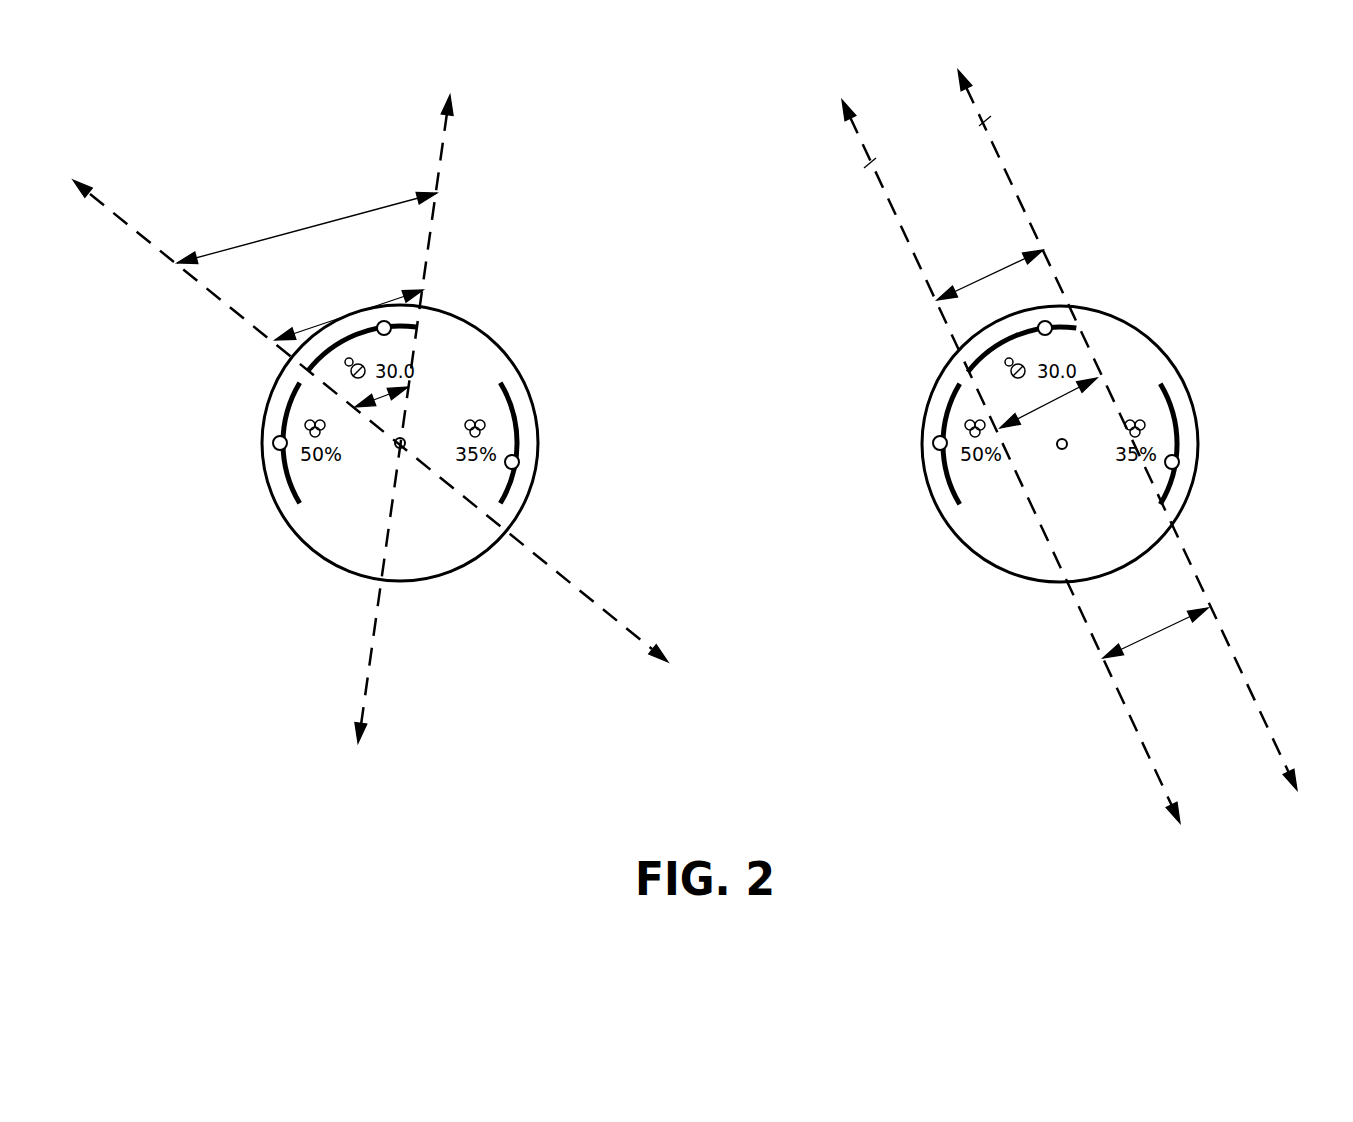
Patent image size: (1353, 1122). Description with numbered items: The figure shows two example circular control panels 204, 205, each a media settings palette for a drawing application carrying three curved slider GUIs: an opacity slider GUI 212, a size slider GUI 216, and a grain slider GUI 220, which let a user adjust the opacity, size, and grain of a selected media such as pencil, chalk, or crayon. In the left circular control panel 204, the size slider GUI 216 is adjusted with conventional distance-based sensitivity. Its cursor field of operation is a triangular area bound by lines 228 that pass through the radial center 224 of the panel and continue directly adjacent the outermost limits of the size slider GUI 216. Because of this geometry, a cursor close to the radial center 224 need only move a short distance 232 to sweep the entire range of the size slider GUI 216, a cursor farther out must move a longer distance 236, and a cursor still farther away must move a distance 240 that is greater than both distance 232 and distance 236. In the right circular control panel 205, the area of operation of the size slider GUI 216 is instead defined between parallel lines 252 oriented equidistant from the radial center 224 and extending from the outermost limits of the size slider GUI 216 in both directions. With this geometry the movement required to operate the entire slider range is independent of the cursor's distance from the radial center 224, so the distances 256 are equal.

The left circular control panel 204 is at (492, 338).
The right circular control panel 205 is at (1143, 332).
The opacity slider GUI 212 is at (280, 443).
The size slider GUI 216 is at (384, 328).
The grain slider GUI 220 is at (512, 462).
The radial center 224 is at (405, 440).
The lines 228 is at (448, 130).
The distance 232 is at (355, 407).
The distance 236 is at (308, 328).
The distance 240 is at (237, 246).
The parallel lines 252 is at (870, 163).
The distances 256 is at (937, 300).